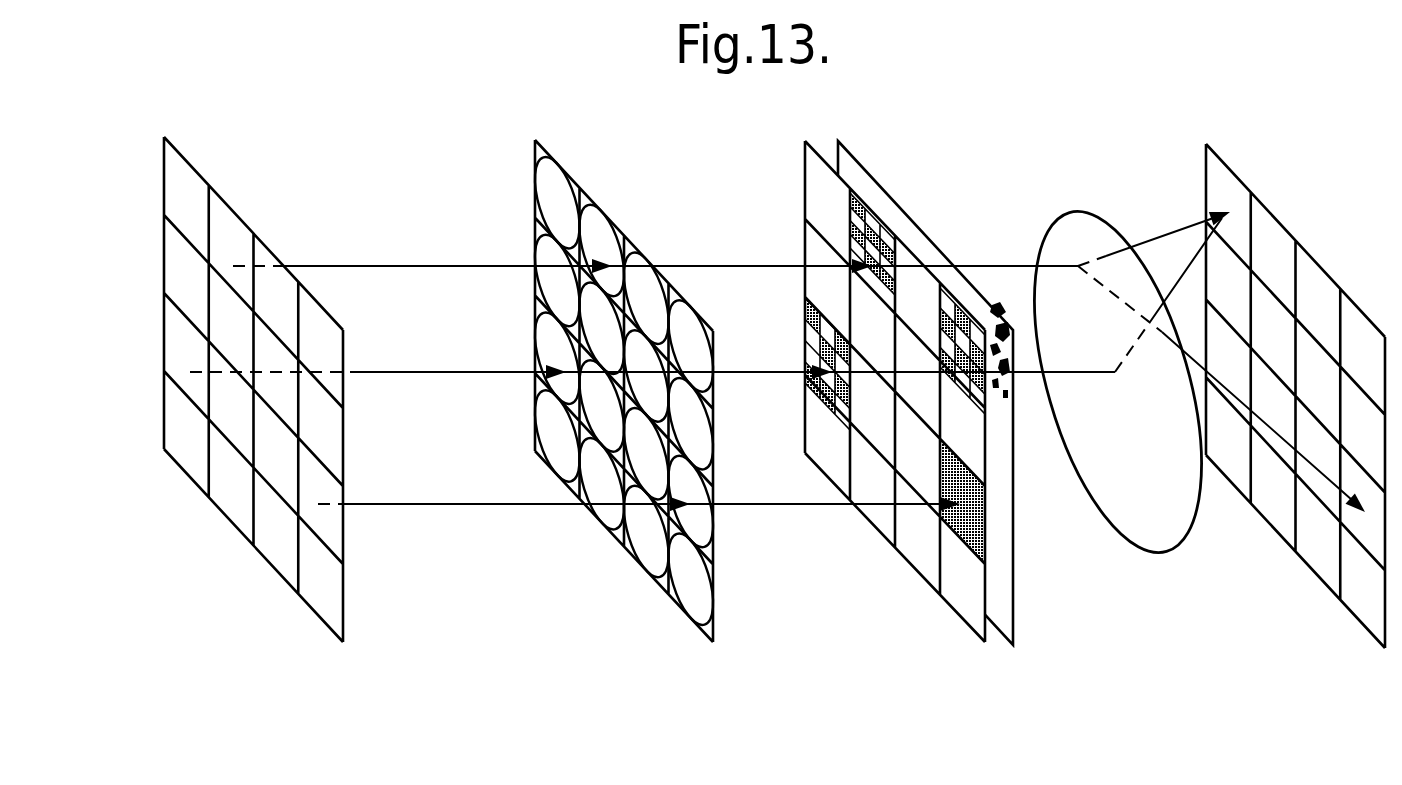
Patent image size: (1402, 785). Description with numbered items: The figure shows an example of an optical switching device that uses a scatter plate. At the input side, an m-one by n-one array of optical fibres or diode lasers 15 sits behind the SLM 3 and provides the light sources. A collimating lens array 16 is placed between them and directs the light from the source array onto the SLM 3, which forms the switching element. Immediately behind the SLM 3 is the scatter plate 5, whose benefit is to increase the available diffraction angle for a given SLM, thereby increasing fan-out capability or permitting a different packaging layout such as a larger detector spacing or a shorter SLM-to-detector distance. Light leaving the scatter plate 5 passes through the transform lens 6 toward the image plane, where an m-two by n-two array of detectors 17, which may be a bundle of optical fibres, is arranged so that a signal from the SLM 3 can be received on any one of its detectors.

The optical fibres or diode lasers 15 is at (290, 590).
The collimating lens array 16 is at (672, 603).
The SLM 3 is at (900, 557).
The scatter plate 5 is at (1015, 637).
The transform lens 6 is at (1082, 216).
The detectors 17 is at (1348, 612).